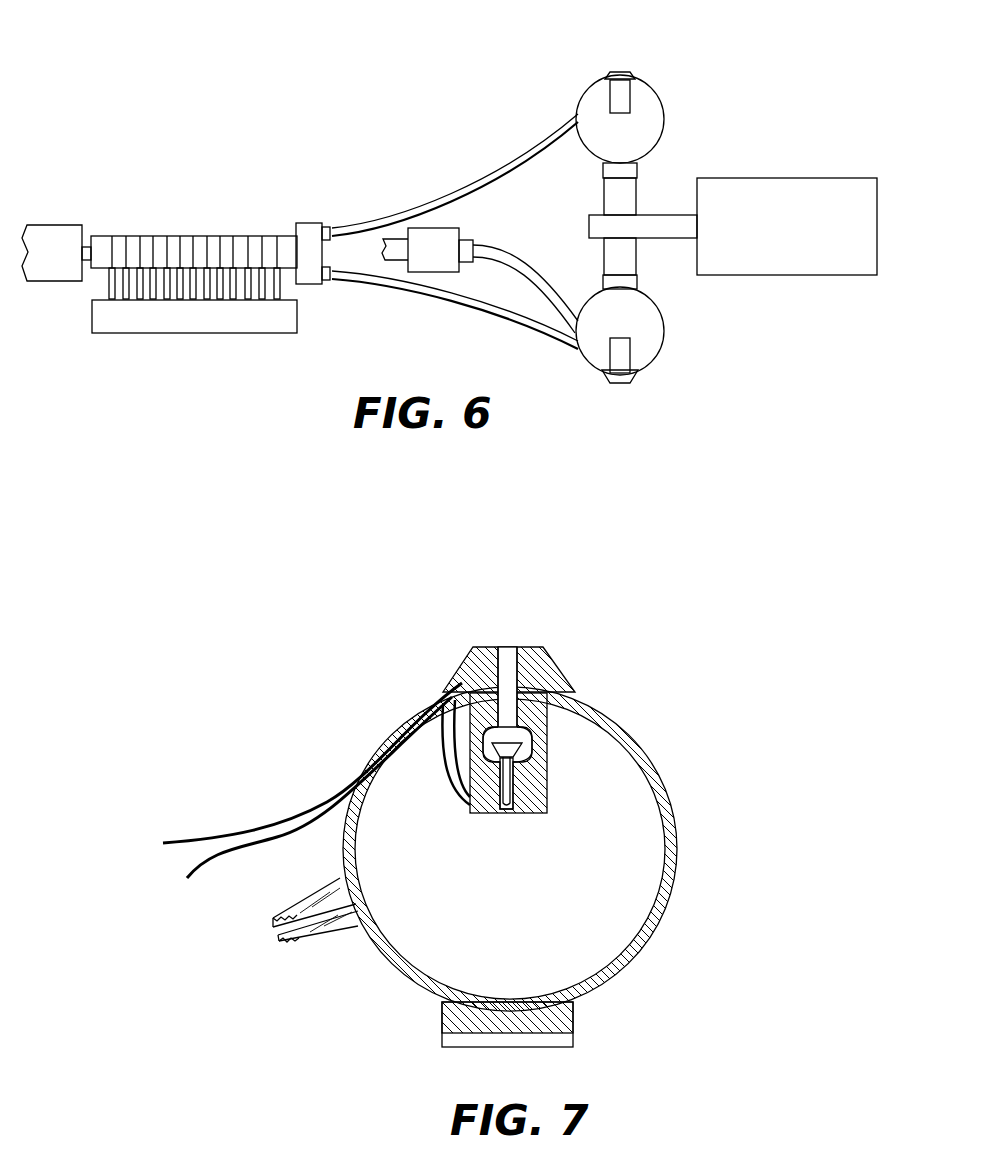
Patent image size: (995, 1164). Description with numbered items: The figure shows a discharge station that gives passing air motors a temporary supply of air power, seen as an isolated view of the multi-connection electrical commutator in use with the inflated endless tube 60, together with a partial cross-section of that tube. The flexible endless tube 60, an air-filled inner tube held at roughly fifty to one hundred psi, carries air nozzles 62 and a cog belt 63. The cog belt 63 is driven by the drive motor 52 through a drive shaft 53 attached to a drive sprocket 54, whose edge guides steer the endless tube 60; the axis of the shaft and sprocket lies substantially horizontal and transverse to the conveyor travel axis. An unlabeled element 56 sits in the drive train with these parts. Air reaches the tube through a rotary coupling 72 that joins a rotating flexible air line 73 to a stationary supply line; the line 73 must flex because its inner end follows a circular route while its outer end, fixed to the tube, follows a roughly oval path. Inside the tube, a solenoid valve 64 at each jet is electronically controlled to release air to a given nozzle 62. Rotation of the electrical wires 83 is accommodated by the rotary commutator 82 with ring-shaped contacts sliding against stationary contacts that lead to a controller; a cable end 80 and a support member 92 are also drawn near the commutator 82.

In FIG. 6, the drive motor 52 is at (802, 190).
In FIG. 6, the drive shaft 53 is at (672, 218).
In FIG. 6, the drive sprocket 54 is at (628, 258).
In FIG. 6, the upper stem 56 is at (630, 170).
In FIG. 6, the inflated endless tube 60 is at (650, 347).
In FIG. 7, the inflated endless tube 60 is at (657, 917).
In FIG. 6, the air nozzle 62 is at (620, 72).
In FIG. 7, the air nozzle 62 is at (540, 670).
In FIG. 6, the cog belt 63 is at (628, 282).
In FIG. 7, the cog belt 63 is at (553, 1018).
In FIG. 6, the solenoid valve 64 is at (630, 98).
In FIG. 7, the solenoid valve 64 is at (533, 778).
In FIG. 6, the rotary coupling 72 is at (432, 238).
In FIG. 6, the flexible air line 73 is at (523, 275).
In FIG. 7, the flexible air line 73 is at (322, 930).
In FIG. 6, the controller 80 is at (48, 230).
In FIG. 6, the rotary commutator 82 is at (167, 234).
In FIG. 6, the electrical wires 83 is at (498, 175).
In FIG. 7, the electrical wires 83 is at (227, 847).
In FIG. 6, the mounting plate 92 is at (186, 318).